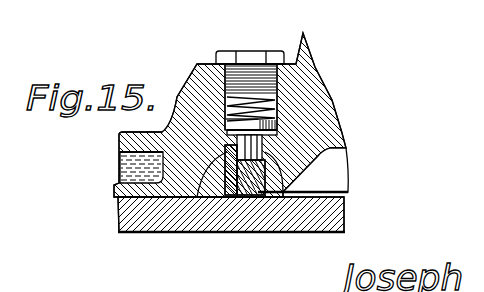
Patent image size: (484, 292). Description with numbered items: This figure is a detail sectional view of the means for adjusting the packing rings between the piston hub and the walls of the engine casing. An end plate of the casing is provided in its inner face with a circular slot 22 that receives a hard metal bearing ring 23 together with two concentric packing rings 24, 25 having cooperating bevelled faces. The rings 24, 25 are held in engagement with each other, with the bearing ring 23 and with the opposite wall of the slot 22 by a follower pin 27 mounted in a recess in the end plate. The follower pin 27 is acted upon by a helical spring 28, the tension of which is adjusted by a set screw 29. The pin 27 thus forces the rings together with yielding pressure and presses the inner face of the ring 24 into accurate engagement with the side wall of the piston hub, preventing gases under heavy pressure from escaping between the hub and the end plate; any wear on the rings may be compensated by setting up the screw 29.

The circular slot 22 is at (175, 200).
The bearing ring 23 is at (210, 197).
The packing ring 24 is at (253, 202).
The packing ring 25 is at (290, 186).
The follower pin 27 is at (192, 88).
The helical spring 28 is at (272, 103).
The set screw 29 is at (251, 51).